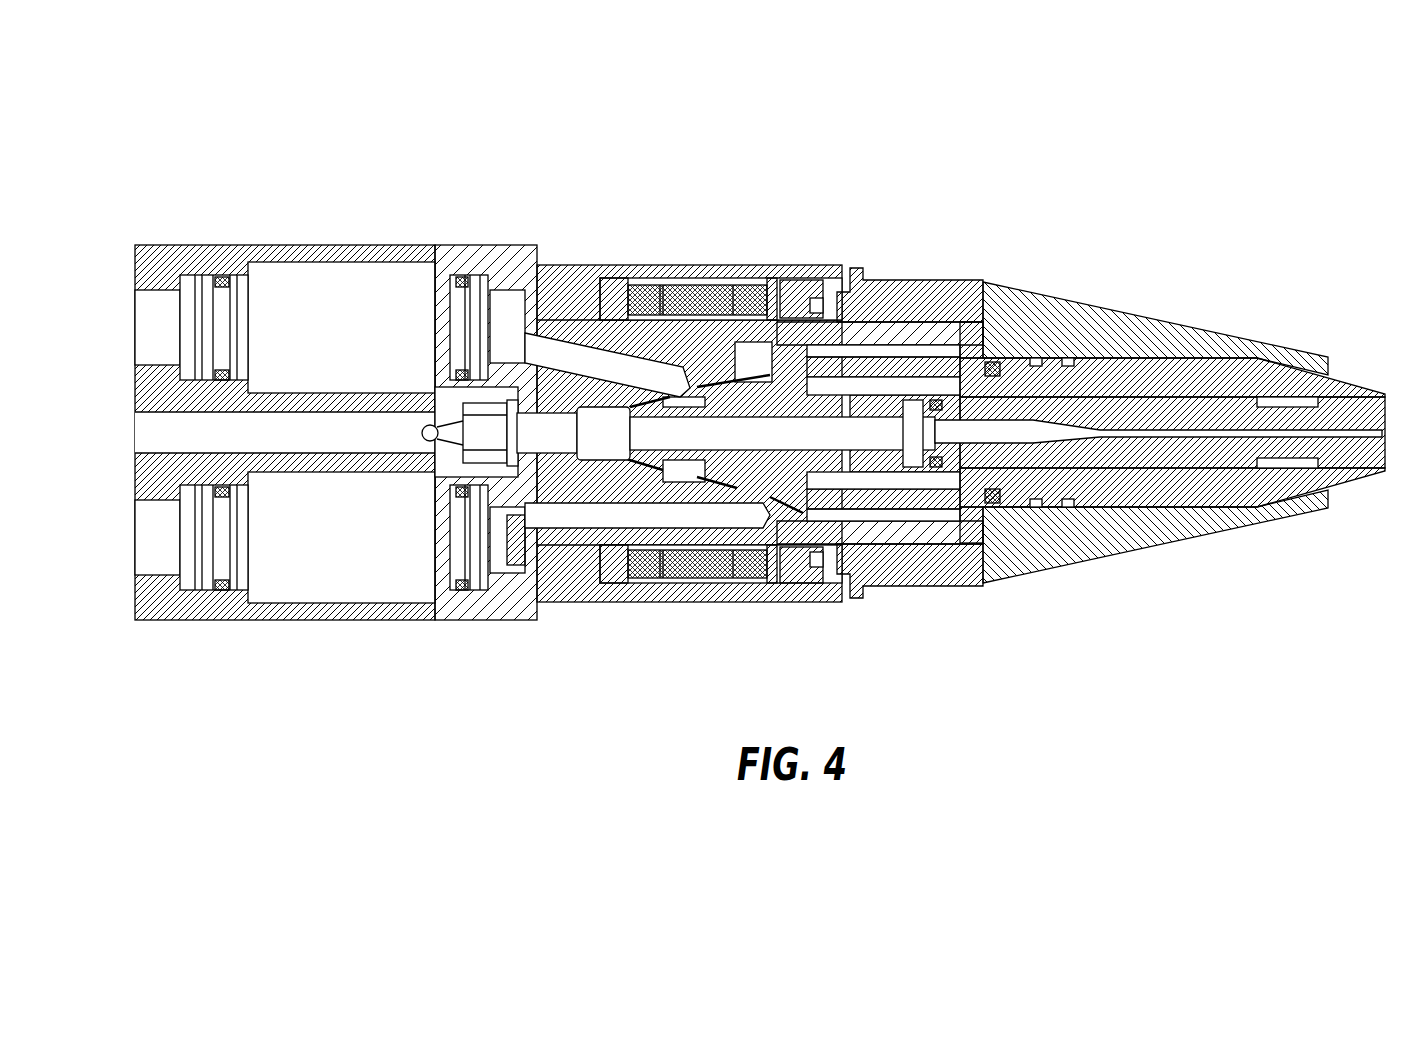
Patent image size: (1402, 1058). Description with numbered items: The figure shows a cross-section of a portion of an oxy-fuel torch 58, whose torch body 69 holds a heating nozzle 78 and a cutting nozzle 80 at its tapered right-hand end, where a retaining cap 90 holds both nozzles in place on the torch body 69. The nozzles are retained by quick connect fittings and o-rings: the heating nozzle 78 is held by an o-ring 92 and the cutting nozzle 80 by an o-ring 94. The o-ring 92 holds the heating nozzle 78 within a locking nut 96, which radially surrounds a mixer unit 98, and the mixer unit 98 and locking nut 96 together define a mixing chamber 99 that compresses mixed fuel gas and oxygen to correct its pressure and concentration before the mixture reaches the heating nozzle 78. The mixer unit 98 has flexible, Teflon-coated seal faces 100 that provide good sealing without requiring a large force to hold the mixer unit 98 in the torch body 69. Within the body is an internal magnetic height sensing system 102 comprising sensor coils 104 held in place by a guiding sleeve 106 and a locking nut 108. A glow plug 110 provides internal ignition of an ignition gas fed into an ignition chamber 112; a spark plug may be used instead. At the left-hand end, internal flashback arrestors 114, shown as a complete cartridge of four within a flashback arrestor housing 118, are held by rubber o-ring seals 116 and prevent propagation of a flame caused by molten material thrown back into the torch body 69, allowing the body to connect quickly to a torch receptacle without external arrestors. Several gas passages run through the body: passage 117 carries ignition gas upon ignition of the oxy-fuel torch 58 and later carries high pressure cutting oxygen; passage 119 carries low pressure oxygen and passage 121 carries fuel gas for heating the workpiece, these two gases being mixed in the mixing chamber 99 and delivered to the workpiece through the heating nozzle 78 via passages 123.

The oxy-fuel torch 58 is at (704, 172).
The torch body 69 is at (549, 580).
The heating nozzle 78 is at (1240, 375).
The cutting nozzle 80 is at (1237, 472).
The retaining cap 90 is at (1112, 300).
The o-ring 92 is at (995, 365).
The o-ring 94 is at (937, 400).
The locking nut 96 is at (1000, 335).
The mixer unit 98 is at (862, 395).
The mixing chamber 99 is at (905, 378).
The flexible seal faces 100 is at (646, 300).
The internal magnetic height sensing system 102 is at (670, 628).
The sensor coils 104 is at (702, 572).
The guiding sleeve 106 is at (567, 605).
The locking nut 108 is at (792, 570).
The glow plug 110 is at (467, 410).
The ignition chamber 112 is at (600, 395).
The flashback arrestors 114 is at (312, 262).
The rubber o-ring seals 116 is at (222, 280).
The passage 117 is at (858, 430).
The flashback arrestor housing 118 is at (165, 243).
The passage 119 is at (540, 345).
The passage 121 is at (620, 512).
The passages 123 is at (1155, 470).